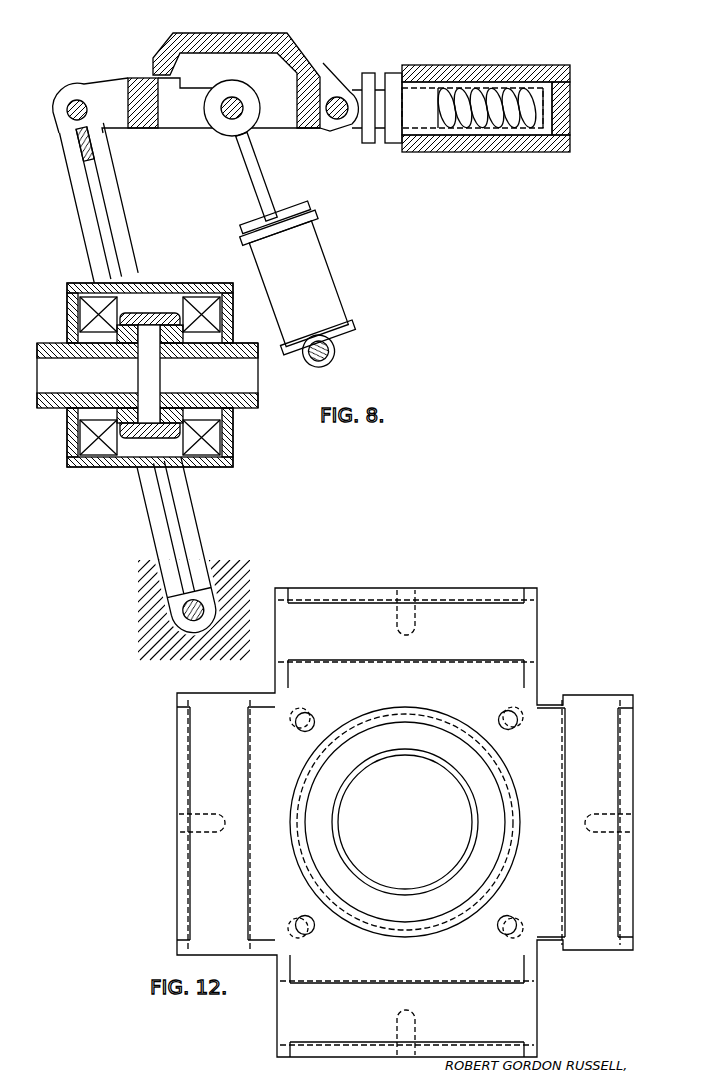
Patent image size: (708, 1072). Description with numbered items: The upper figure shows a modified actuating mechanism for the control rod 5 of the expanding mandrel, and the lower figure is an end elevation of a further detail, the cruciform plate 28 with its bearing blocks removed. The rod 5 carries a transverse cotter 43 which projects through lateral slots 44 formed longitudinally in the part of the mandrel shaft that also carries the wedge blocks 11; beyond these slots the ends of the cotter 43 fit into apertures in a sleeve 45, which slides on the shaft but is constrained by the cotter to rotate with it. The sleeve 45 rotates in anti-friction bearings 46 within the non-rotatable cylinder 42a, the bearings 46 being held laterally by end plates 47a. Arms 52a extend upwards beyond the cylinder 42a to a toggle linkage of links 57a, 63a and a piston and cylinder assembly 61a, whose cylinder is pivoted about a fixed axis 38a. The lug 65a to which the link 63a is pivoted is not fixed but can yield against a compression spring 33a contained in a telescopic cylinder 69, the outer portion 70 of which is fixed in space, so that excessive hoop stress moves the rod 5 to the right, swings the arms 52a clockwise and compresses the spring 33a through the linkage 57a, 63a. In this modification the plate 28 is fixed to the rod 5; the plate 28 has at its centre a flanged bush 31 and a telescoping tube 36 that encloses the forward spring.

In FIG. 8, the control rod 5 is at (243, 372).
In FIG. 8, the wedge block 11 is at (233, 348).
In FIG. 12, the cruciform plate 28 is at (555, 787).
In FIG. 12, the flanged bush 31 is at (427, 913).
In FIG. 8, the compression spring 33a is at (497, 92).
In FIG. 12, the telescoping tube 36 is at (493, 767).
In FIG. 8, the fixed axis 38a is at (338, 333).
In FIG. 8, the cylinder 42a is at (149, 291).
In FIG. 8, the transverse cotter 43 is at (148, 372).
In FIG. 8, the lateral slots 44 is at (215, 333).
In FIG. 8, the sleeve 45 is at (70, 415).
In FIG. 8, the anti-friction bearings 46 is at (100, 300).
In FIG. 8, the end plates 47a is at (70, 343).
In FIG. 8, the arms 52a is at (97, 253).
In FIG. 8, the link 57a is at (118, 92).
In FIG. 8, the piston and cylinder assembly 61a is at (308, 277).
In FIG. 8, the link 63a is at (286, 36).
In FIG. 8, the lug 65a is at (355, 87).
In FIG. 8, the telescopic cylinder 69 is at (383, 74).
In FIG. 8, the outer portion 70 is at (528, 72).